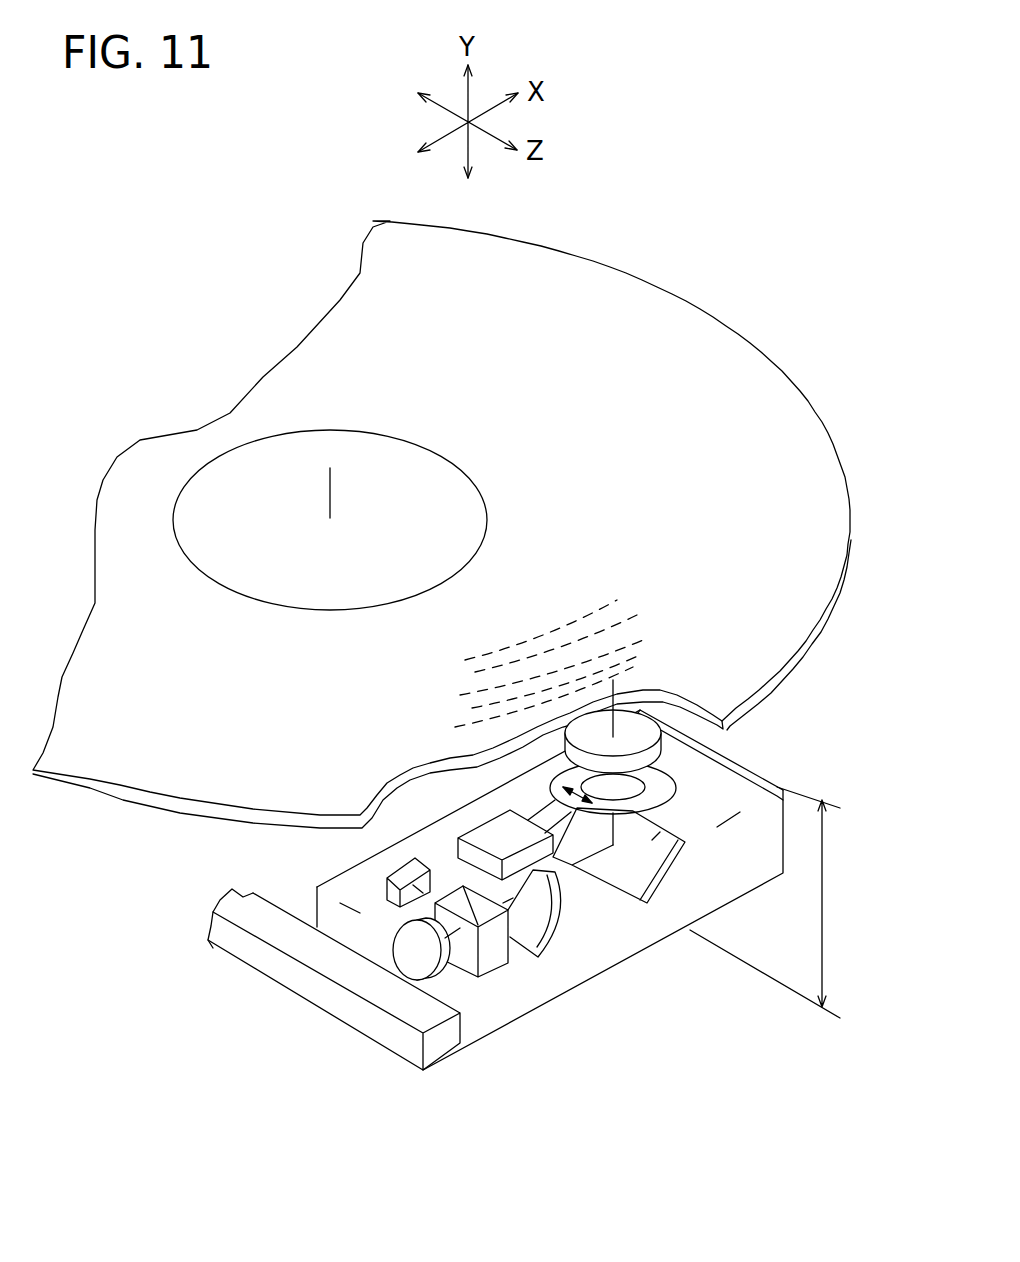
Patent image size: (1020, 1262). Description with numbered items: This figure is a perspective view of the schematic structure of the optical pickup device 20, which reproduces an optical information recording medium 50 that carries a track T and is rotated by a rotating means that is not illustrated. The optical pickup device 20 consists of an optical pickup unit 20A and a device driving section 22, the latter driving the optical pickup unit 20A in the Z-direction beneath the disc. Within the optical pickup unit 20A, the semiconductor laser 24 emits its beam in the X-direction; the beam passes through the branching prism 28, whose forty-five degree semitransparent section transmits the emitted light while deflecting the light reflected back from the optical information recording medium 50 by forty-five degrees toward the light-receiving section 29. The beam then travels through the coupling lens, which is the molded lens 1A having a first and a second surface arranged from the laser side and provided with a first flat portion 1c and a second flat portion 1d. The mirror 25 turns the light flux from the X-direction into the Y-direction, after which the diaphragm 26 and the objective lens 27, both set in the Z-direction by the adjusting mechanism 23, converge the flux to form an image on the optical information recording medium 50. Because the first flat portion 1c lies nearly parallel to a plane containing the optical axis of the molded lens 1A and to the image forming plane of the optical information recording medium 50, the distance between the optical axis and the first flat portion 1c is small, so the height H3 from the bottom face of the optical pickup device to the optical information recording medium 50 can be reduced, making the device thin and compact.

The optical pickup device 20 is at (442, 524).
The optical information recording medium 50 is at (715, 352).
The track T is at (607, 585).
The optical pickup unit 20A is at (487, 871).
The mirror 25 is at (675, 840).
The height H3 is at (777, 902).
The device driving section 22 is at (242, 950).
The light-receiving section 29 is at (403, 866).
The adjusting mechanism 23 is at (485, 838).
The diaphragm 26 is at (669, 741).
The objective lens 27 is at (638, 731).
The molded lens 1A is at (598, 929).
The first flat portion 1c is at (523, 950).
The second flat portion 1d is at (572, 867).
The branching prism 28 is at (493, 958).
The semiconductor laser 24 is at (413, 950).